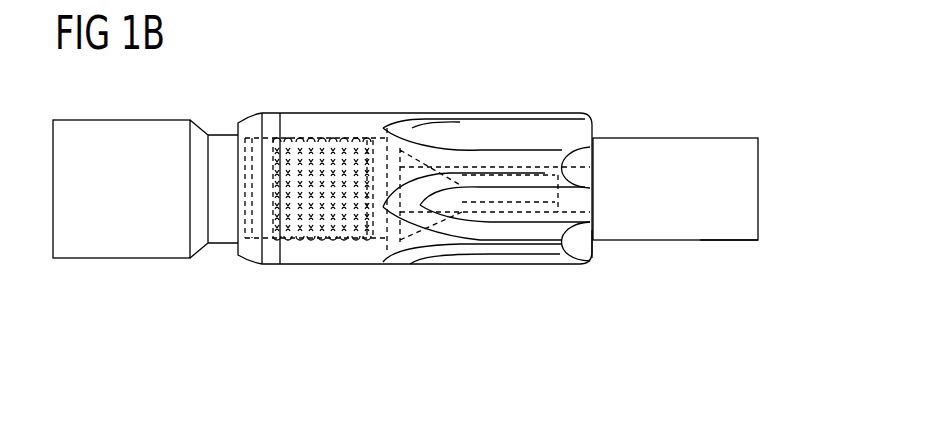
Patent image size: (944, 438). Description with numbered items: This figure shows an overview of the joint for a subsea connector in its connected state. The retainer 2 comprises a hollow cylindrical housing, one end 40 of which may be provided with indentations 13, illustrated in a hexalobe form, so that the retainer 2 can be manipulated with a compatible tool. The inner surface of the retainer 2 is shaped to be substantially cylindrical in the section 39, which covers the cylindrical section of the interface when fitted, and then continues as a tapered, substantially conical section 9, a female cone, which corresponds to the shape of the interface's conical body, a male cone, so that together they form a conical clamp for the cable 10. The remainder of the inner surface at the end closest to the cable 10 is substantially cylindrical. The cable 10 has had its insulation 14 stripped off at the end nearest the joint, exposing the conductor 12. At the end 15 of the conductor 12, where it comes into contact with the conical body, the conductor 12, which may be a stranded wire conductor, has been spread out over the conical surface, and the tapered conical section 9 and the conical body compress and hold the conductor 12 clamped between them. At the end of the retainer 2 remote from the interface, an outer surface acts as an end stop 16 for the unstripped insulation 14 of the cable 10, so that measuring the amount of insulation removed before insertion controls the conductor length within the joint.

The retainer 2 is at (405, 201).
The tapered substantially conical section 9 is at (432, 150).
The cable 10 is at (670, 152).
The conductor 12 is at (508, 187).
The indentations 13 is at (545, 264).
The insulation 14 is at (720, 240).
The end of the conductor 15 is at (412, 170).
The end stop 16 is at (594, 243).
The section 39 is at (308, 112).
The end 40 is at (486, 178).